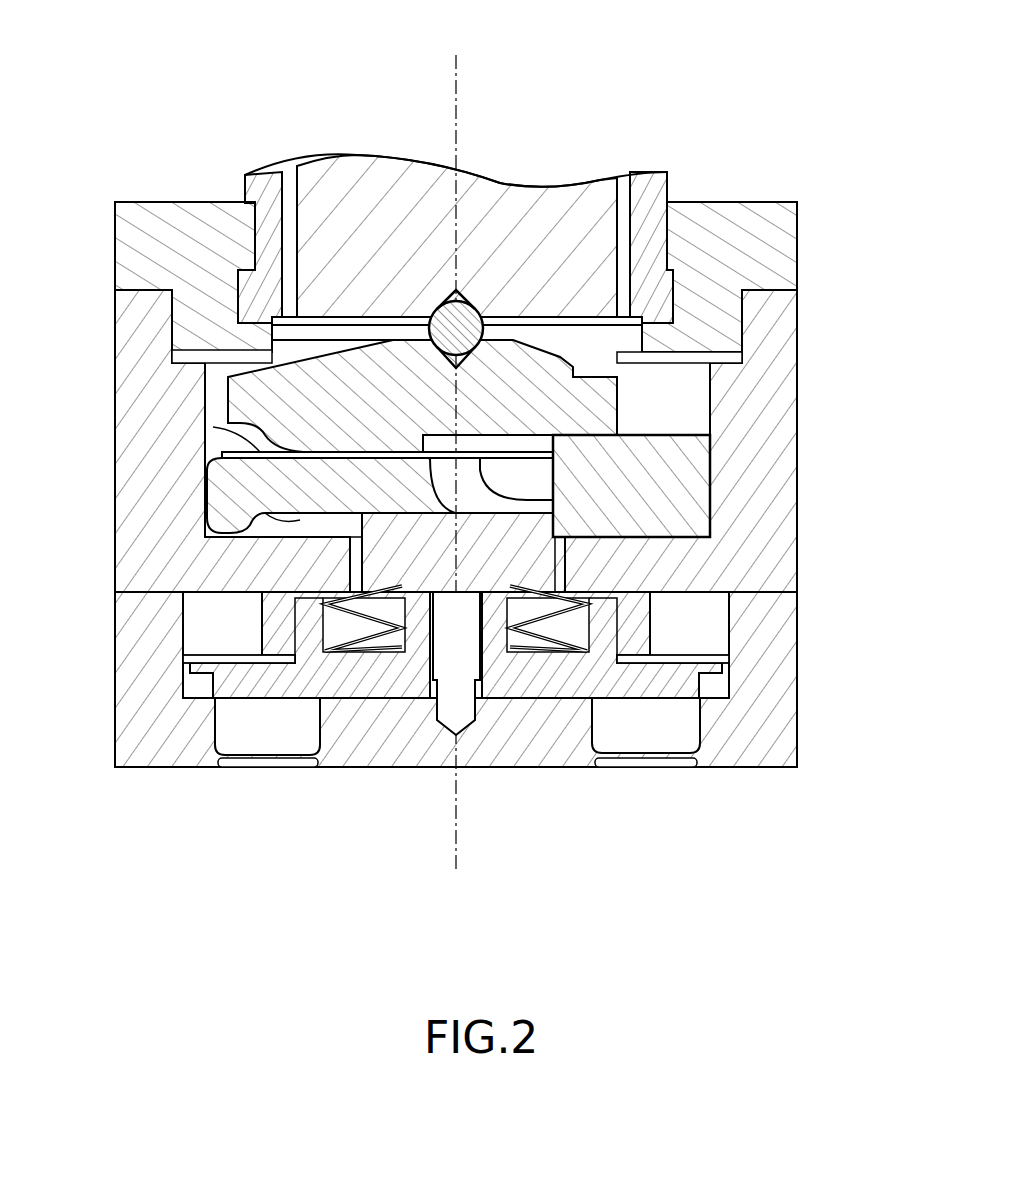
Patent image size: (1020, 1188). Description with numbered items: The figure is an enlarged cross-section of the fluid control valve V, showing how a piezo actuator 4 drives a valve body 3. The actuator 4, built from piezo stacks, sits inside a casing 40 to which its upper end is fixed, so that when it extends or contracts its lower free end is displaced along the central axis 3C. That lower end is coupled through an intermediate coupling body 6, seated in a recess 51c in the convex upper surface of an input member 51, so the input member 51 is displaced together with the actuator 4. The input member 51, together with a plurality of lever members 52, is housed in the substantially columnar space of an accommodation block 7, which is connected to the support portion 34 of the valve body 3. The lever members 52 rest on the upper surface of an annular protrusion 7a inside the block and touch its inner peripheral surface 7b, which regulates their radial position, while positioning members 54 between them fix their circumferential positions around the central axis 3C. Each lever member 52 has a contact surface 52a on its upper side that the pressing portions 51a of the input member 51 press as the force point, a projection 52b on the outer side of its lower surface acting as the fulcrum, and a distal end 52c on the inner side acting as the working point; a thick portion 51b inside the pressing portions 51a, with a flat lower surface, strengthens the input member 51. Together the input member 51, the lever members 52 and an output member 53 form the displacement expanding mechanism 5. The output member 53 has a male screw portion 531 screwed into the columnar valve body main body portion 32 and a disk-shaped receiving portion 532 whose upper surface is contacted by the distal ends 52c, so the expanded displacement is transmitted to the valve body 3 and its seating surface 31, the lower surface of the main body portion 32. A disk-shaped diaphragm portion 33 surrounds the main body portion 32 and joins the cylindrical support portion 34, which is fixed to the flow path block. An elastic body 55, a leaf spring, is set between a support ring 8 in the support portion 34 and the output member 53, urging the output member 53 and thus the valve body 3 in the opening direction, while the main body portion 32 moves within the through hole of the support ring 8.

The valve V is at (150, 88).
The valve body 3 is at (509, 778).
The central axis 3C is at (454, 477).
The actuator 4 is at (392, 175).
The casing 40 is at (262, 175).
The displacement expanding mechanism 5 is at (557, 336).
The intermediate coupling body 6 is at (466, 300).
The accommodation block 7 is at (800, 486).
The annular protrusion 7a is at (283, 593).
The inner peripheral surface 7b is at (225, 395).
The support ring 8 is at (650, 680).
The seating surface 31 is at (425, 767).
The valve body main body portion 32 is at (598, 718).
The diaphragm portion 33 is at (268, 767).
The support portion 34 is at (115, 738).
The input member 51 is at (232, 352).
The pressing portion 51a is at (300, 505).
The thick portion 51b is at (560, 495).
The recess 51c is at (570, 362).
The lever member 52 is at (260, 448).
The contact surface 52a is at (240, 423).
The projection 52b is at (300, 520).
The distal end 52c is at (367, 540).
The output member 53 is at (554, 692).
The male screw portion 531 is at (483, 643).
The receiving portion 532 is at (562, 553).
The positioning member 54 is at (714, 462).
The elastic body 55 is at (365, 612).